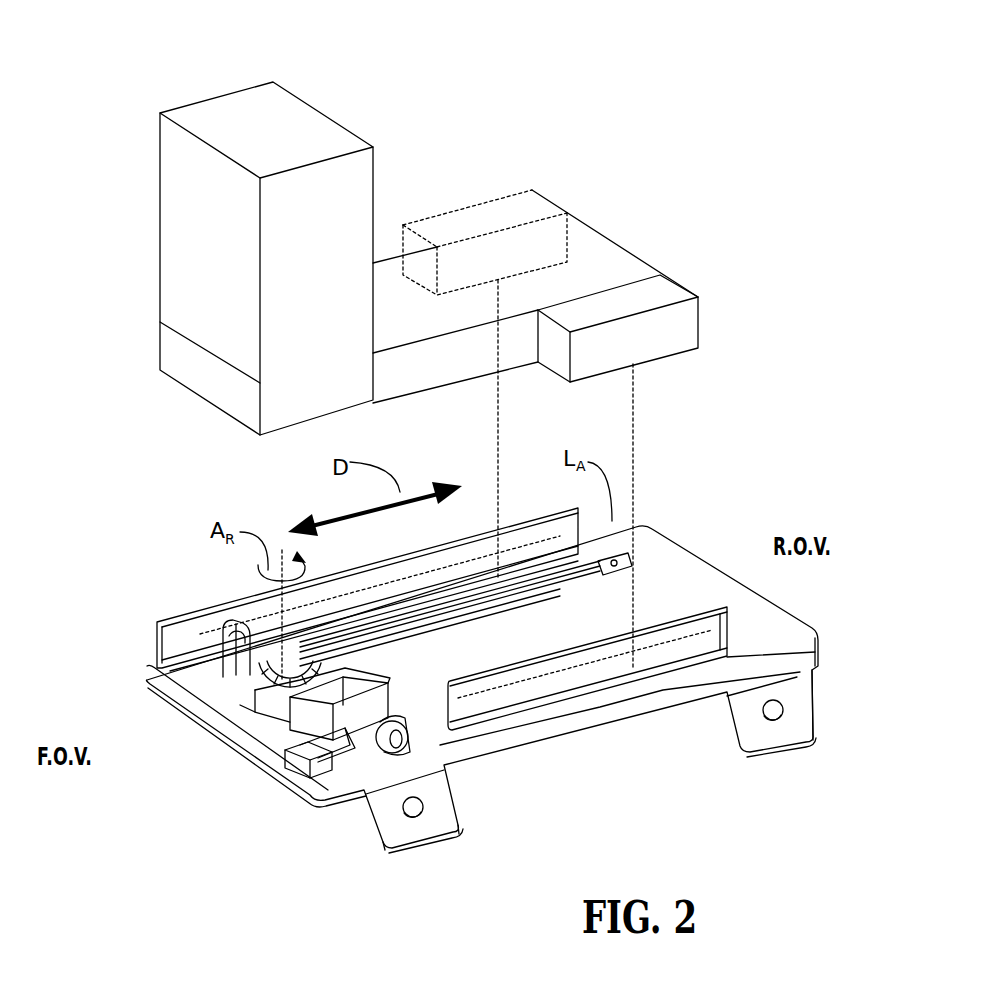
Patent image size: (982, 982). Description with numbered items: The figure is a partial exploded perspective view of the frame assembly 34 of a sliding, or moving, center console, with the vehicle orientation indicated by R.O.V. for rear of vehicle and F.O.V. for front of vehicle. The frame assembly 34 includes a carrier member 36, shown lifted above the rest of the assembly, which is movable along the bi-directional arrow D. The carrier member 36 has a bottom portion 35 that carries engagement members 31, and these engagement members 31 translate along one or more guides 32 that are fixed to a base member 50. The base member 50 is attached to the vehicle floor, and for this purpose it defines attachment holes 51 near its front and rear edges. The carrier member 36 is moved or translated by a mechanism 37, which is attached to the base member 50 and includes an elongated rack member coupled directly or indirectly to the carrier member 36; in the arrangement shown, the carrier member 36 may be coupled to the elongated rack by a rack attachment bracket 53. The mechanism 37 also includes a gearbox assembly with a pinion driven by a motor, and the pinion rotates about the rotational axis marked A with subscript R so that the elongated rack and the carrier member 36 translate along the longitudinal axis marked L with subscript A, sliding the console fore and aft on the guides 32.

The frame assembly 34 is at (148, 79).
The carrier member 36 is at (159, 231).
The bottom portion 35 is at (613, 237).
The engagement members 31 is at (487, 202).
The guides 32 is at (178, 640).
The mechanism 37 is at (235, 708).
The base member 50 is at (212, 738).
The attachment holes 51 is at (414, 818).
The rack attachment bracket 53 is at (560, 588).